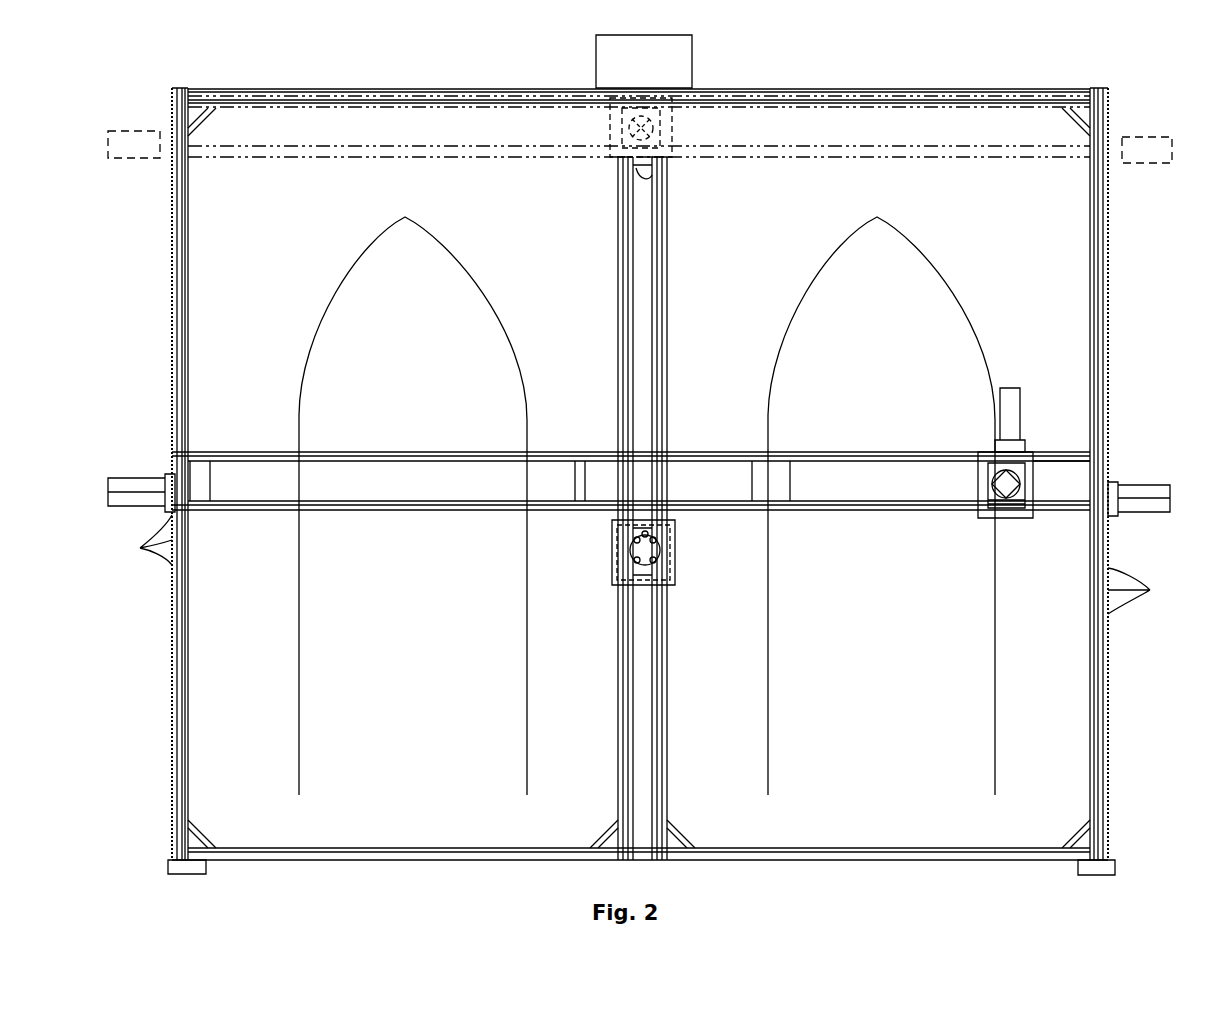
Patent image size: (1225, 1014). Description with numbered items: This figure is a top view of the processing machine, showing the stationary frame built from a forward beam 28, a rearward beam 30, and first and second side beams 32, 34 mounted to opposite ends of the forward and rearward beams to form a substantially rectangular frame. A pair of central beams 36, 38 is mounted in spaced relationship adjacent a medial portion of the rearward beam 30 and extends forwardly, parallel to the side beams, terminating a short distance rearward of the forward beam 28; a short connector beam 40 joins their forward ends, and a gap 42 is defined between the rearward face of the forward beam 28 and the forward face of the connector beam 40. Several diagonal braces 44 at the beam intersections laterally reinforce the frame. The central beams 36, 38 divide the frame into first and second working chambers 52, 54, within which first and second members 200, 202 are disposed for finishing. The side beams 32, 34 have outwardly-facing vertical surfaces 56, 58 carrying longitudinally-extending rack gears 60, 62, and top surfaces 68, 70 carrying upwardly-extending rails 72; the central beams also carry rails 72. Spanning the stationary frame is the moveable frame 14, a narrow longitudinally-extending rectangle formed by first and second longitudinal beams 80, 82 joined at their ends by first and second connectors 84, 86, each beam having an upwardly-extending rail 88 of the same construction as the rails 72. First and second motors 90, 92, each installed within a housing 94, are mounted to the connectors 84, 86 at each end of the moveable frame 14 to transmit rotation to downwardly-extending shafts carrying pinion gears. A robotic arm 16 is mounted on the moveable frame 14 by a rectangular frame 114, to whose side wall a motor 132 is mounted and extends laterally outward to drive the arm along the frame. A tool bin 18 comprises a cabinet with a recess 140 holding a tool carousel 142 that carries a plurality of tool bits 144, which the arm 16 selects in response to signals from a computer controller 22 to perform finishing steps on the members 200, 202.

The moveable frame 14 is at (713, 449).
The robotic arm 16 is at (1024, 513).
The tool bin 18 is at (680, 530).
The computer controller 22 is at (694, 70).
The forward beam 28 is at (830, 88).
The rearward beam 30 is at (958, 864).
The first side beam 32 is at (172, 270).
The second side beam 34 is at (1112, 275).
The central beam 36 is at (616, 244).
The central beam 38 is at (669, 250).
The connector beam 40 is at (646, 172).
The gap 42 is at (604, 100).
The braces 44 is at (208, 118).
The first working chamber 52 is at (528, 261).
The second working chamber 54 is at (1028, 259).
The vertical surface 56 is at (182, 818).
The vertical surface 58 is at (1108, 741).
The rack gear 60 is at (140, 548).
The rack gear 62 is at (1150, 590).
The top surface 68 is at (190, 292).
The top surface 70 is at (1098, 355).
The rail 72 is at (190, 236).
The first longitudinal beam 80 is at (745, 452).
The second longitudinal beam 82 is at (790, 509).
The first connector 84 is at (196, 478).
The second connector 86 is at (1100, 478).
The rail 88 is at (580, 452).
The first motor 90 is at (106, 489).
The second motor 92 is at (1172, 499).
The housing 94 is at (136, 478).
The rectangular frame 114 is at (1020, 461).
The motor 132 is at (1012, 390).
The recess 140 is at (678, 570).
The tool carousel 142 is at (656, 584).
The tool bits 144 is at (636, 574).
The first member 200 is at (424, 612).
The second member 202 is at (902, 629).